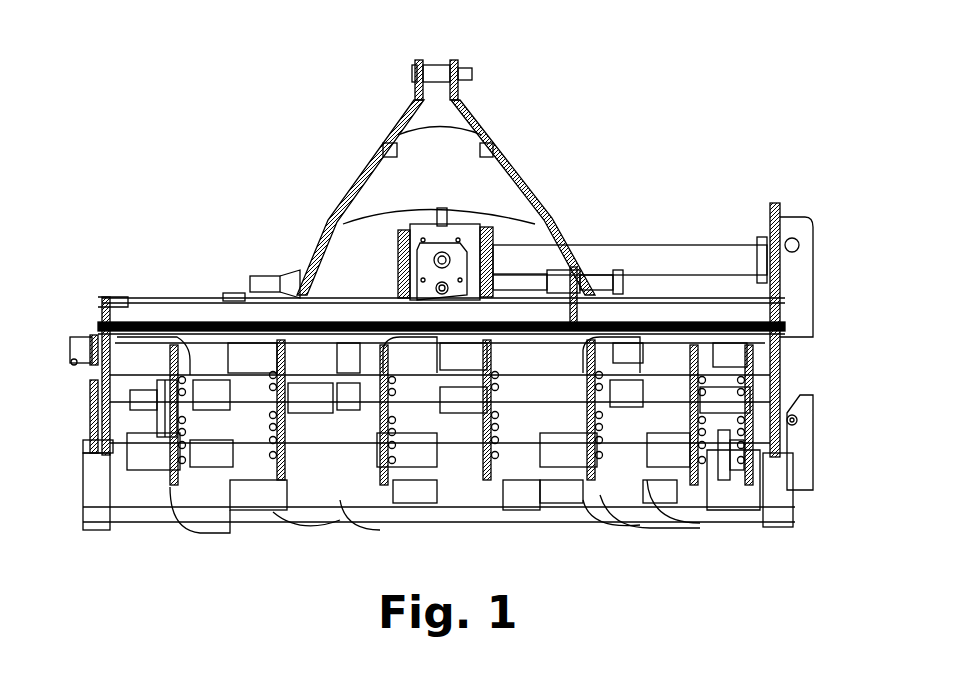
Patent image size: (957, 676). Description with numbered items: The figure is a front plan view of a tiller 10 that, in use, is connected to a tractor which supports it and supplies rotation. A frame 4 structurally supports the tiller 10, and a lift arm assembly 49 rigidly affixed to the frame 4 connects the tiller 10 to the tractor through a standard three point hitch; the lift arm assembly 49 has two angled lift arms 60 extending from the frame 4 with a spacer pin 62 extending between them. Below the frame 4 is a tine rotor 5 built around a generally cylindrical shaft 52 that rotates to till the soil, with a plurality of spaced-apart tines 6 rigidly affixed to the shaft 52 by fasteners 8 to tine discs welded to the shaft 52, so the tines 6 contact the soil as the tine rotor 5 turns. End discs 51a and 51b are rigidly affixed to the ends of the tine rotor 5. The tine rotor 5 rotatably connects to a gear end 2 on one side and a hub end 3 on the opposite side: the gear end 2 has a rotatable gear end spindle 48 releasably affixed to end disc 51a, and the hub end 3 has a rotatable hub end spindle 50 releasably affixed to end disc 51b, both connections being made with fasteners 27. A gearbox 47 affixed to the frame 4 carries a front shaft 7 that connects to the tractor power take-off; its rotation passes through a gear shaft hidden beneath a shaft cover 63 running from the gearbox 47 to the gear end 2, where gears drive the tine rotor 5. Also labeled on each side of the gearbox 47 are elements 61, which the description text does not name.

The tiller 10 is at (706, 128).
The gear end 2 is at (780, 327).
The hub end 3 is at (100, 378).
The frame 4 is at (123, 297).
The tine rotor 5 is at (340, 428).
The tines 6 is at (660, 497).
The front shaft 7 is at (440, 260).
The fasteners 8 is at (500, 463).
The fasteners 27 is at (733, 450).
The gearbox 47 is at (463, 220).
The gear end spindle 48 is at (757, 457).
The lift arm assembly 49 is at (420, 85).
The hub end spindle 50 is at (90, 433).
The end disc 51a is at (747, 407).
The end disc 51b is at (147, 397).
The shaft 52 is at (252, 438).
The lift arms 60 is at (410, 108).
The bearing 61 is at (273, 277).
The spacer pin 62 is at (438, 62).
The shaft cover 63 is at (660, 247).